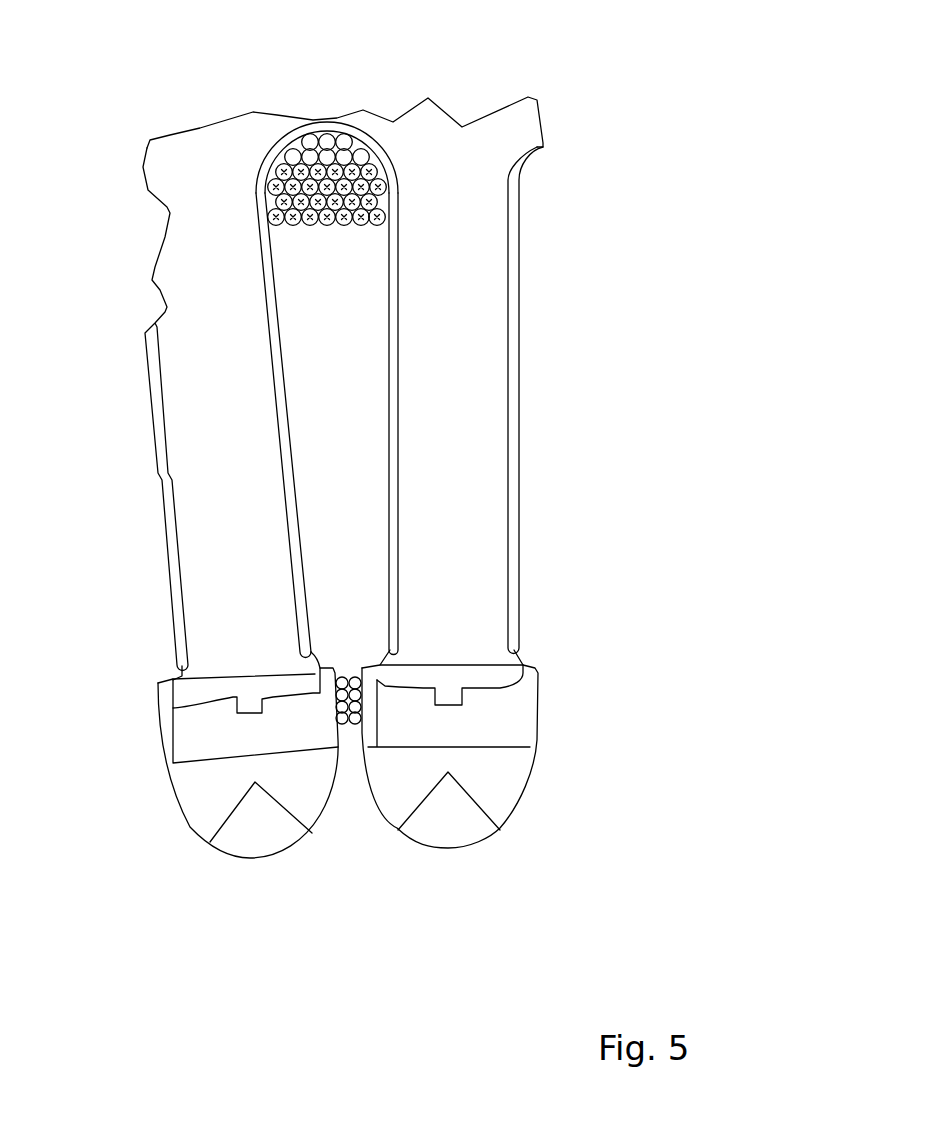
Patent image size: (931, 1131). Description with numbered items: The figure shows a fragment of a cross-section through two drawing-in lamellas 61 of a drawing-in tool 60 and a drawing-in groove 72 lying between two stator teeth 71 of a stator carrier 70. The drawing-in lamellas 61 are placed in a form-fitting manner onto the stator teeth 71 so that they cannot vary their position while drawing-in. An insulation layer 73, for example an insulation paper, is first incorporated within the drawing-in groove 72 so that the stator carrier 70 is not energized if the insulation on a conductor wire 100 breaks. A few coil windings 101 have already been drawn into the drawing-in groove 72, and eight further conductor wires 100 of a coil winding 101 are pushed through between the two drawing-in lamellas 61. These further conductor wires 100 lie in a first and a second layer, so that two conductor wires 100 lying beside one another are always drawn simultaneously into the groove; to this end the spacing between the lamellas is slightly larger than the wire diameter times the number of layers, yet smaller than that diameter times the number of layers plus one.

The drawing-in tool 60 is at (354, 804).
The drawing-in lamella 61 is at (200, 722).
The stator carrier 70 is at (192, 148).
The stator tooth 71 is at (215, 425).
The drawing-in groove 72 is at (340, 350).
The insulation layer 73 is at (288, 470).
The conductor wire 100 is at (457, 483).
The coil winding 101 is at (382, 225).